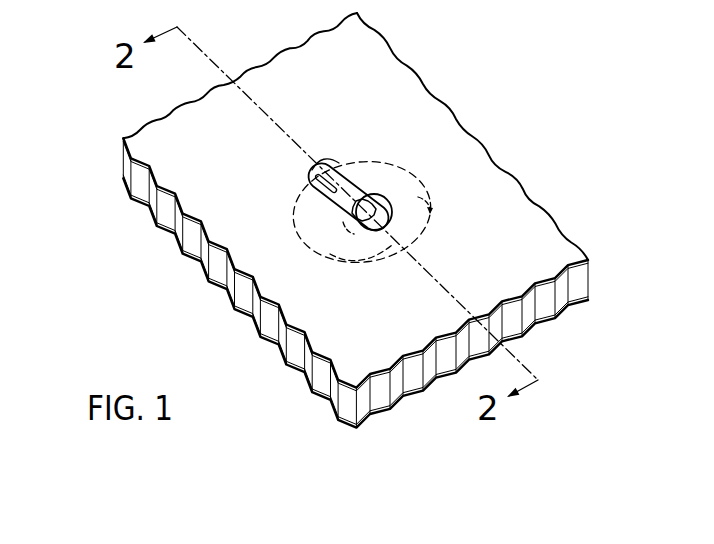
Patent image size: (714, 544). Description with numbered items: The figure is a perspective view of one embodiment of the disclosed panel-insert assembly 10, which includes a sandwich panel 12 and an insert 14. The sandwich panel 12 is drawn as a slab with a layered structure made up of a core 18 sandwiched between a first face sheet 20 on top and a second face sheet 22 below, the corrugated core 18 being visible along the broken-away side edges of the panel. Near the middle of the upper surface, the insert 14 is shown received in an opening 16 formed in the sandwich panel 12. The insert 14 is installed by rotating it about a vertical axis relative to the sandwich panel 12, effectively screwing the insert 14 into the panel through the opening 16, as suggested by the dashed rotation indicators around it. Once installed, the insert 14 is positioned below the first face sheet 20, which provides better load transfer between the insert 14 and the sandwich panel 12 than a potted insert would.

The panel-insert assembly 10 is at (364, 229).
The sandwich panel 12 is at (493, 160).
The insert 14 is at (344, 170).
The opening 16 is at (358, 180).
The core 18 is at (562, 304).
The first face sheet 20 is at (538, 217).
The second face sheet 22 is at (412, 396).